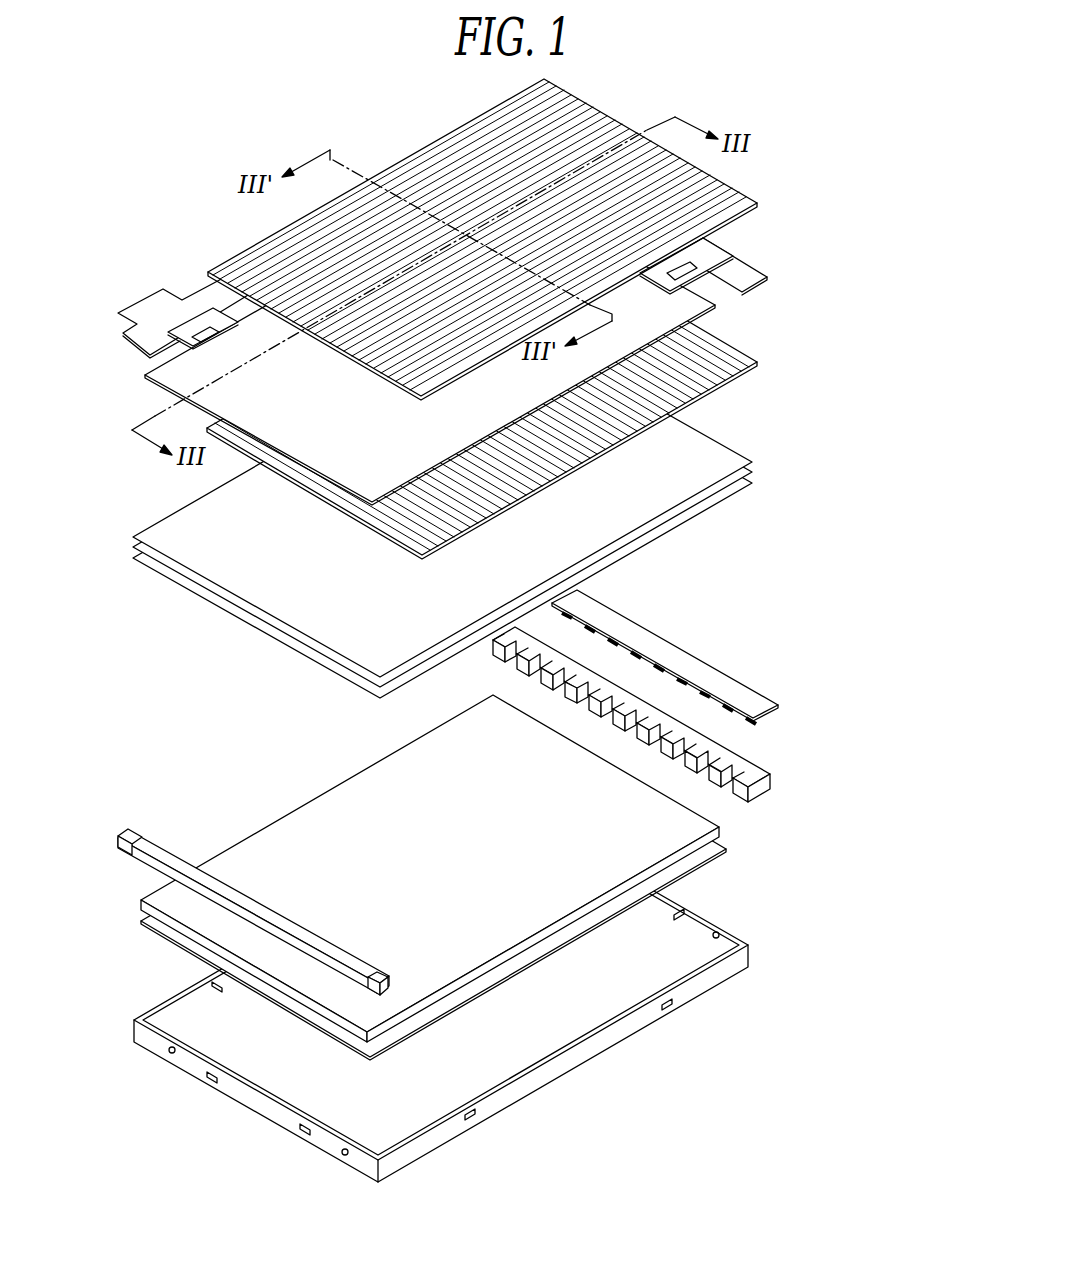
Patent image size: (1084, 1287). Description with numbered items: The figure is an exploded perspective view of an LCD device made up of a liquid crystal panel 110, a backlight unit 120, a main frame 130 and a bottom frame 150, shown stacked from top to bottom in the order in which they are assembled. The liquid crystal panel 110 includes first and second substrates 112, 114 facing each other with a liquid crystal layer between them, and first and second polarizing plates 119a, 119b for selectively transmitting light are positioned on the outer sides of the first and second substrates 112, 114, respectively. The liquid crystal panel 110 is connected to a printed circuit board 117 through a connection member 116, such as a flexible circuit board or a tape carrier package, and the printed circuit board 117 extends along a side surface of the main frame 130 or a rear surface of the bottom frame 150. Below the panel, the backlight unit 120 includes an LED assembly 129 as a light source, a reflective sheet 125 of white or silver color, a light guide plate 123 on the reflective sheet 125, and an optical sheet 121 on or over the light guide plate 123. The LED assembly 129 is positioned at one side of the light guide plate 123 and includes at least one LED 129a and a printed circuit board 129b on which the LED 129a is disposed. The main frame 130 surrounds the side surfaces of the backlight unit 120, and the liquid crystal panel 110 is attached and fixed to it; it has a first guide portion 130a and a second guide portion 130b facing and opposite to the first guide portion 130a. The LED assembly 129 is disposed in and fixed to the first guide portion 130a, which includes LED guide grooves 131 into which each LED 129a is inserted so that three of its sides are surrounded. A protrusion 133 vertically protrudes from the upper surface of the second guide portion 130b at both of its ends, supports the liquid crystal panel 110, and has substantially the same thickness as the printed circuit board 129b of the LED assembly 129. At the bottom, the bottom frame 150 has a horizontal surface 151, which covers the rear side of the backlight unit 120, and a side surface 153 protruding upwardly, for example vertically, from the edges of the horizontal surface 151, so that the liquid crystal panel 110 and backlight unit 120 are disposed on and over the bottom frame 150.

The liquid crystal panel 110 is at (469, 319).
The first substrate 112 is at (687, 310).
The second substrate 114 is at (720, 271).
The connection member 116 is at (187, 338).
The printed circuit board 117 is at (145, 306).
The first polarizing plate 119a is at (727, 357).
The second polarizing plate 119b is at (727, 200).
The backlight unit 120 is at (515, 691).
The optical sheet 121 is at (471, 510).
The light guide plate 123 is at (726, 835).
The reflective sheet 125 is at (727, 849).
The LED assembly 129 is at (722, 657).
The LED 129a is at (731, 703).
The printed circuit board 129b is at (707, 678).
The main frame 130 is at (432, 811).
The first guide portion 130a is at (531, 714).
The second guide portion 130b is at (242, 864).
The LED guide groove 131 is at (665, 738).
The protrusion 133 is at (128, 830).
The bottom frame 150 is at (521, 993).
The horizontal surface 151 is at (670, 957).
The side surface 153 is at (742, 962).